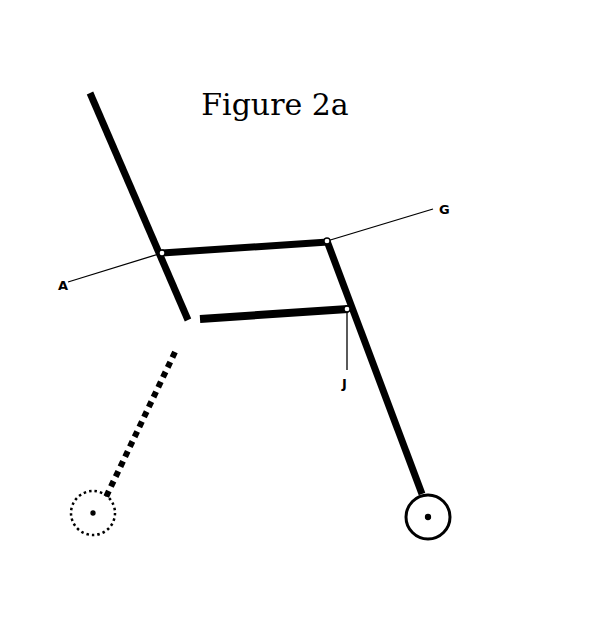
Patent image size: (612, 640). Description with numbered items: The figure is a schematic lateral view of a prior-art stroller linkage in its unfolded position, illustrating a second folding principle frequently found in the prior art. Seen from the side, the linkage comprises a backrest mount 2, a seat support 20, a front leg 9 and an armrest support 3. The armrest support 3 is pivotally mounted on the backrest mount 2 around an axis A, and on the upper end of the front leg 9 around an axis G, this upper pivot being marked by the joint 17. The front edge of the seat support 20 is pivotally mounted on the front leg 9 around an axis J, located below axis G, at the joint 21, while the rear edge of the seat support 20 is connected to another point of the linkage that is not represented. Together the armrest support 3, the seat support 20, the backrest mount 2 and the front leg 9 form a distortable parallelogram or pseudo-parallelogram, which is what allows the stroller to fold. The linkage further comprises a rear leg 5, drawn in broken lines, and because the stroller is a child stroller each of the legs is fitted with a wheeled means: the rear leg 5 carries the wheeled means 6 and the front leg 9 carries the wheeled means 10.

The backrest mount 2 is at (134, 206).
The armrest support 3 is at (250, 245).
The seat support 20 is at (240, 313).
The front leg 9 is at (374, 357).
The pivot joint G 17 is at (331, 238).
The pivot joint J 21 is at (350, 306).
The rear leg 5 is at (148, 410).
The wheeled means 6 is at (80, 497).
The wheeled means 10 is at (450, 508).